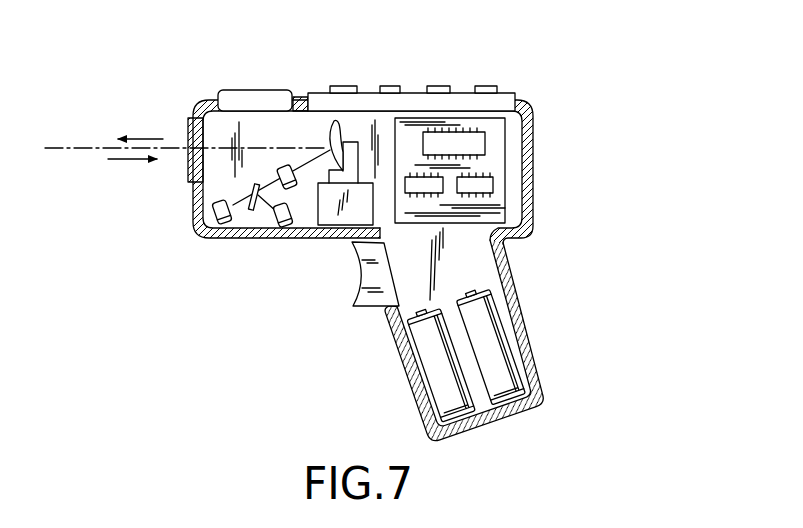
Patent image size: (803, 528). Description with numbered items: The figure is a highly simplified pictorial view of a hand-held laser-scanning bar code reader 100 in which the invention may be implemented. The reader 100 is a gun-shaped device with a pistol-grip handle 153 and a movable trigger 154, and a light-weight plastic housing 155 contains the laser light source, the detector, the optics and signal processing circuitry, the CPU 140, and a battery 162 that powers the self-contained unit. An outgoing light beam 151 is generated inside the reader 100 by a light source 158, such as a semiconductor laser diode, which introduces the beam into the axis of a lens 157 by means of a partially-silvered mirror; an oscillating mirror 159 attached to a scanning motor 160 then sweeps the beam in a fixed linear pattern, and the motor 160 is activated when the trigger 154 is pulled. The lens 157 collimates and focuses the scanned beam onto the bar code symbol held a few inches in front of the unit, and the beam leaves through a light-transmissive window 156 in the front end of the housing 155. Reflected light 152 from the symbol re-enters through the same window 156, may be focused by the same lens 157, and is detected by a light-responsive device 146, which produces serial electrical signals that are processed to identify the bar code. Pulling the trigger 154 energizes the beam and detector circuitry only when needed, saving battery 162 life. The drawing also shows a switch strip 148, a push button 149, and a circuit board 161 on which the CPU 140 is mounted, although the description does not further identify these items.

The reader 100 is at (288, 350).
The CPU 140 is at (432, 140).
The light-responsive device 146 is at (226, 227).
The control switch strip 148 is at (462, 93).
The push button 149 is at (262, 100).
The outgoing light beam 151 is at (137, 138).
The reflected light 152 is at (146, 161).
The handle 153 is at (399, 355).
The trigger 154 is at (363, 280).
The housing 155 is at (530, 190).
The light-transmissive window 156 is at (182, 118).
The lens 157 is at (286, 165).
The light source 158 is at (283, 226).
The oscillating mirror 159 is at (347, 126).
The scanning motor 160 is at (332, 216).
The circuit board 161 is at (507, 143).
The battery 162 is at (499, 338).